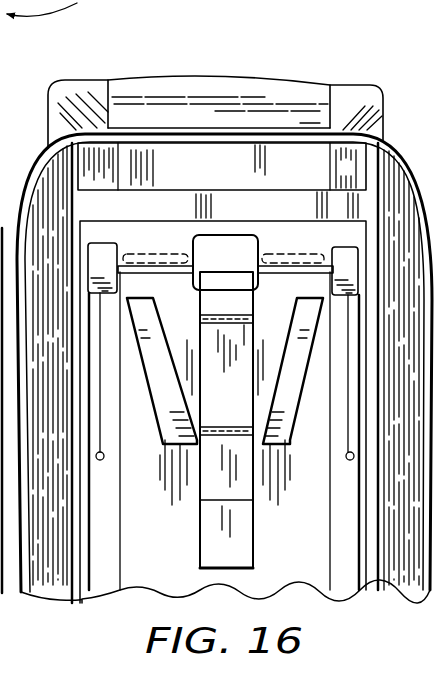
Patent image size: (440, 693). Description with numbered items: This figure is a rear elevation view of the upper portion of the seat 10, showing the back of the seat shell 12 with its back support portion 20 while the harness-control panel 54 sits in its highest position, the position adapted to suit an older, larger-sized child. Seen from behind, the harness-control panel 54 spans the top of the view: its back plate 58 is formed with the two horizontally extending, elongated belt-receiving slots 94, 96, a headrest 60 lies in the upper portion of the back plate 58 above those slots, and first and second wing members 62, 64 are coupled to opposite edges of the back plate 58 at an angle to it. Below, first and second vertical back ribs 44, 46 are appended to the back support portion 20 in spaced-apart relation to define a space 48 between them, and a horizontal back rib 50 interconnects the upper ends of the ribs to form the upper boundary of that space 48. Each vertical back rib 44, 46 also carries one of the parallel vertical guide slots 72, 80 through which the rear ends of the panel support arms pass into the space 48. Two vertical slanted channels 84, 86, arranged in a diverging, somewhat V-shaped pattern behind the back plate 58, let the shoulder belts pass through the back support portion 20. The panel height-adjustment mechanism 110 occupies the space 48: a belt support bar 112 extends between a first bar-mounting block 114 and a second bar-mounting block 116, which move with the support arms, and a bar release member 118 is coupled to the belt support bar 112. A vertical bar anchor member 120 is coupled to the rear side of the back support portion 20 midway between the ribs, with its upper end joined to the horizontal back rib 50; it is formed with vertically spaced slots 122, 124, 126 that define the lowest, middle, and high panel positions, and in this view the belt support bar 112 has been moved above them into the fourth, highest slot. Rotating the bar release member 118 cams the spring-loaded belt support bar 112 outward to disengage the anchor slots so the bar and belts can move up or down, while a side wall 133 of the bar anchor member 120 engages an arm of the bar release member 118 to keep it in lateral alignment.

The seat 10 is at (37, 113).
The seat shell 12 is at (400, 147).
The back support portion 20 is at (312, 583).
The first vertical back rib 44 is at (67, 560).
The second vertical back rib 46 is at (383, 558).
The space 48 is at (153, 553).
The horizontal back rib 50 is at (280, 163).
The harness-control panel 54 is at (192, 66).
The back plate 58 is at (150, 322).
The headrest 60 is at (240, 85).
The first wing member 62 is at (88, 93).
The second wing member 64 is at (357, 102).
The first vertical guide slot 72 is at (100, 468).
The second vertical guide slot 80 is at (352, 472).
The first slanted channel 84 is at (160, 358).
The second slanted channel 86 is at (278, 400).
The first belt-receiving slot 94 is at (182, 256).
The second belt-receiving slot 96 is at (273, 253).
The panel height-adjustment mechanism 110 is at (187, 236).
The belt support bar 112 is at (163, 271).
The first bar-mounting block 114 is at (103, 262).
The second bar-mounting block 116 is at (335, 252).
The bar release member 118 is at (217, 234).
The vertical bar anchor member 120 is at (256, 533).
The slot 122 is at (235, 431).
The slot 124 is at (226, 376).
The slot 126 is at (233, 318).
The side wall 133 is at (253, 312).